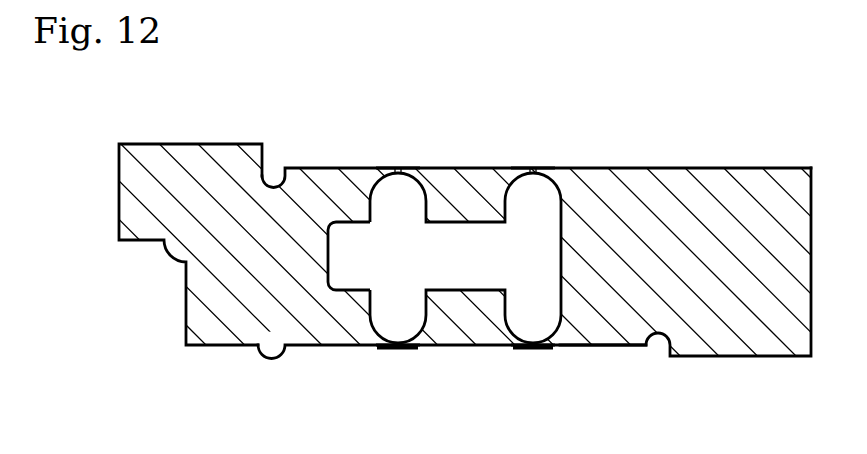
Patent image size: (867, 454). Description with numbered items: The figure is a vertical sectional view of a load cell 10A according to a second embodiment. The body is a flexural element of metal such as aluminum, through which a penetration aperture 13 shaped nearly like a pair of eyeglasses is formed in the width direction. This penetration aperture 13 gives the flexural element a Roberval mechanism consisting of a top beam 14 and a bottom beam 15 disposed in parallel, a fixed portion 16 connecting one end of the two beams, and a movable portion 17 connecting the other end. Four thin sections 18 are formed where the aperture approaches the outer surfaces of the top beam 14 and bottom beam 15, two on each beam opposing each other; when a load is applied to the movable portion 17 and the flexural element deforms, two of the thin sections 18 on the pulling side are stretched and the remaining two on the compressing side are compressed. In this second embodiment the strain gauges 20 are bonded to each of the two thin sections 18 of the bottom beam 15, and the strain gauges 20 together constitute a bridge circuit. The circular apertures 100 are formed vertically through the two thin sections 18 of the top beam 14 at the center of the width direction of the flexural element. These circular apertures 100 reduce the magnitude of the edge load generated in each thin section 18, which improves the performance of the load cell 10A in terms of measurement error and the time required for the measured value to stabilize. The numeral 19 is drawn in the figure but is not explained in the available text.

The load cell 10A is at (650, 142).
The penetration aperture 13 is at (449, 268).
The top beam 14 is at (453, 197).
The bottom beam 15 is at (475, 318).
The fixed portion 16 is at (760, 192).
The movable portion 17 is at (217, 182).
The thin section 18 is at (381, 170).
The recess 19 is at (348, 273).
The strain gauge 20 is at (403, 346).
The circular aperture 100 is at (398, 170).